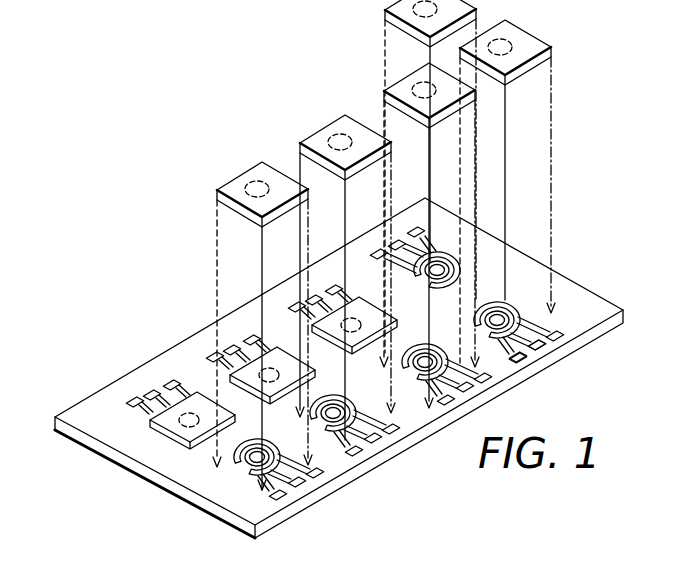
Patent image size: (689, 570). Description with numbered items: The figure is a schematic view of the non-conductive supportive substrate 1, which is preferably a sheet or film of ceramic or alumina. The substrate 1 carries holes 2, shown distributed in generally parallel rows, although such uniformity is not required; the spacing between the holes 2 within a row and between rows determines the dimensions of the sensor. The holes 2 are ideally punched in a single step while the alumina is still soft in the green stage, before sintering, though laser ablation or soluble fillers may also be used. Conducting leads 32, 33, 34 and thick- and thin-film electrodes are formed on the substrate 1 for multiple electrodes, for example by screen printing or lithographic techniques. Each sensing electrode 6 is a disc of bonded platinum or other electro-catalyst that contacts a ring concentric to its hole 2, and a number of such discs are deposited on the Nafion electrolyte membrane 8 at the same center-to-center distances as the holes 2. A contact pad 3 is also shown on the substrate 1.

The substrate 1 is at (98, 415).
The holes 2 is at (437, 268).
The contact pad 3 is at (523, 360).
The sensing electrode 6 is at (255, 183).
The Nafion electrolyte membrane 8 is at (522, 32).
The conducting lead 32 is at (552, 334).
The conducting lead 33 is at (544, 343).
The conducting lead 34 is at (413, 403).